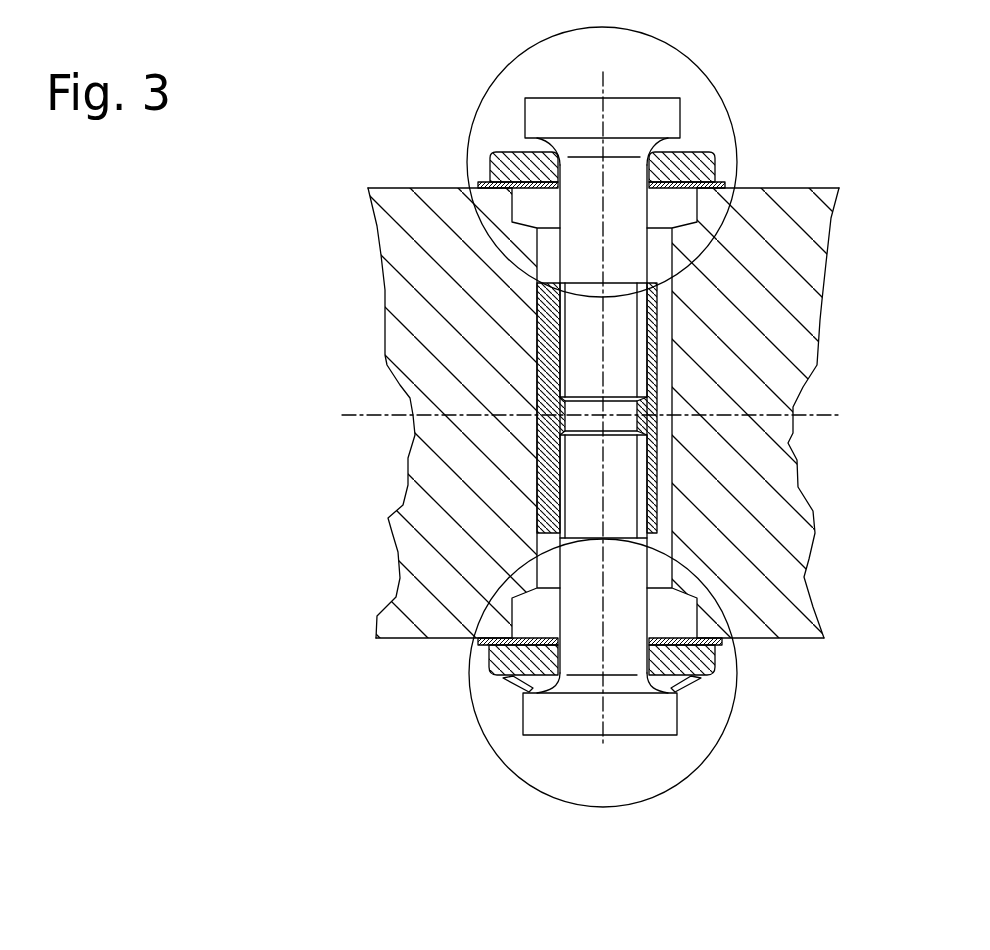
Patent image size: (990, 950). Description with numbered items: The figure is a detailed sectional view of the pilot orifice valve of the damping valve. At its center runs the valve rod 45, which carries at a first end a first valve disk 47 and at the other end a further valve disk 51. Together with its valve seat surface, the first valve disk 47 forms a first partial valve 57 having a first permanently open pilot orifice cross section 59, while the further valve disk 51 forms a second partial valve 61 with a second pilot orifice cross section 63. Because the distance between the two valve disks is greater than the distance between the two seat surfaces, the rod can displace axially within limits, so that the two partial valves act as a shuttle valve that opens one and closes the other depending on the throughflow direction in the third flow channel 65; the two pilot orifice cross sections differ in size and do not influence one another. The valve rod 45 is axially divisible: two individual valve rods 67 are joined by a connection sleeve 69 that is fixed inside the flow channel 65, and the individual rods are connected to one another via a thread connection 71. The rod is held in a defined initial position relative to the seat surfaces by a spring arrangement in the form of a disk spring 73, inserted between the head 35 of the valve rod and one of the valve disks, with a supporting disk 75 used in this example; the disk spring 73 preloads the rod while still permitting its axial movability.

The head 35 is at (553, 720).
The valve rod 45 is at (661, 410).
The first valve disk 47 is at (480, 185).
The further valve disk 51 is at (482, 645).
The first partial valve 57 is at (703, 68).
The first pilot orifice cross section 59 is at (722, 186).
The second partial valve 61 is at (707, 755).
The second pilot orifice cross section 63 is at (708, 642).
The third flow channel 65 is at (670, 359).
The individual valve rods 67 is at (587, 327).
The connection sleeve 69 is at (660, 482).
The thread connection 71 is at (563, 447).
The disk spring 73 is at (690, 683).
The supporting disk 75 is at (488, 666).